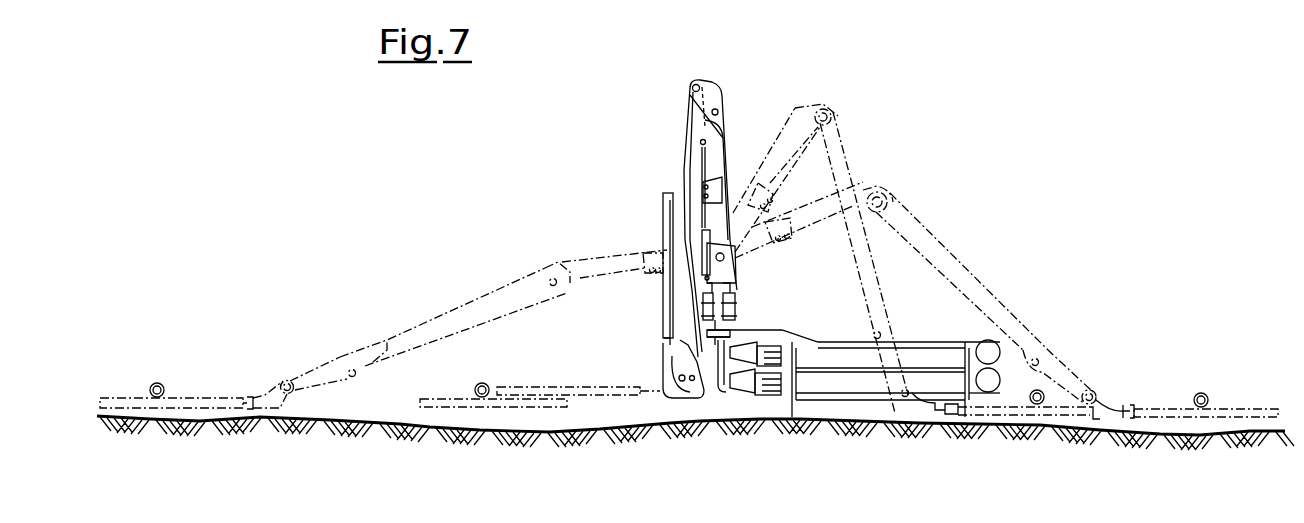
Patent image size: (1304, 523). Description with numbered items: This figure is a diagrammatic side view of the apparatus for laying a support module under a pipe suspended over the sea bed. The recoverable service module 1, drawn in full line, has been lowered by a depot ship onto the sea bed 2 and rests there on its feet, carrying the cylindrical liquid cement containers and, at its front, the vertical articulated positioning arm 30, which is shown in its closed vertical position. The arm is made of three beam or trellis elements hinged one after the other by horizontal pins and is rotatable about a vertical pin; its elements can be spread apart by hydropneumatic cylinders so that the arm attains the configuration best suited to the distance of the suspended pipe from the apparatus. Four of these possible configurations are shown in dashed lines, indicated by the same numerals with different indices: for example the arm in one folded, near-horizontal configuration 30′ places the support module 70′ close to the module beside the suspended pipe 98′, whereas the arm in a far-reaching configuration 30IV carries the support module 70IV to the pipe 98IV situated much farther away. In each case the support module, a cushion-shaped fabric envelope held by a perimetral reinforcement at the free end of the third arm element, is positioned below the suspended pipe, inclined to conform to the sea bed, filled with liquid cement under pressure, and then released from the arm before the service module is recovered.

The recoverable service module 1 is at (904, 337).
The sea bed 2 is at (687, 427).
The vertical articulated positioning arm 30 is at (683, 171).
The articulated positioning arm (first configuration) 30′ is at (590, 385).
The articulated positioning arm (fourth configuration) 30IV is at (1010, 300).
The support module (first configuration) 70′ is at (450, 398).
The support module (fourth configuration) 70IV is at (1163, 403).
The suspended pipe to be supported (first position) 98′ is at (487, 384).
The suspended pipe to be supported (fourth position) 98IV is at (1207, 395).